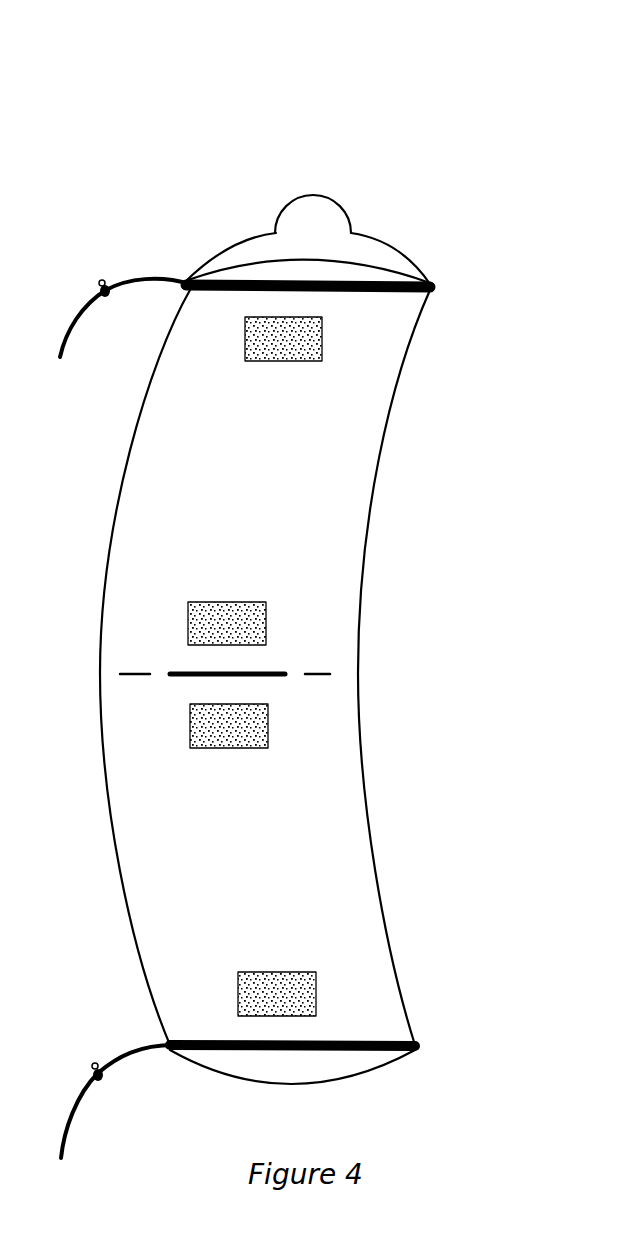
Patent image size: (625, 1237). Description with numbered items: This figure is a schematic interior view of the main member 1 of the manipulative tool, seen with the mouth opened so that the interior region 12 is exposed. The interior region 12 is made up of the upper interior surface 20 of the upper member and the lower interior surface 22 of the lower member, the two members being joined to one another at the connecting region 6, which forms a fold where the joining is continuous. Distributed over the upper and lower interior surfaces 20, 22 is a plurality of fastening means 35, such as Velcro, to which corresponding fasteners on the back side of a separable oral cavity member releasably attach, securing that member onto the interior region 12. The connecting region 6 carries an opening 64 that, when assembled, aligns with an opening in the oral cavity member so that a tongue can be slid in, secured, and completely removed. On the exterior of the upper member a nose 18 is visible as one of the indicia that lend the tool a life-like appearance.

The main member 1 is at (312, 140).
The nose 18 is at (332, 212).
The interior region 12 is at (345, 395).
The upper interior surface 20 is at (347, 477).
The lower interior surface 22 is at (330, 803).
The connecting region 6 is at (340, 674).
The opening 64 is at (190, 673).
The fastening means 35 is at (255, 340).